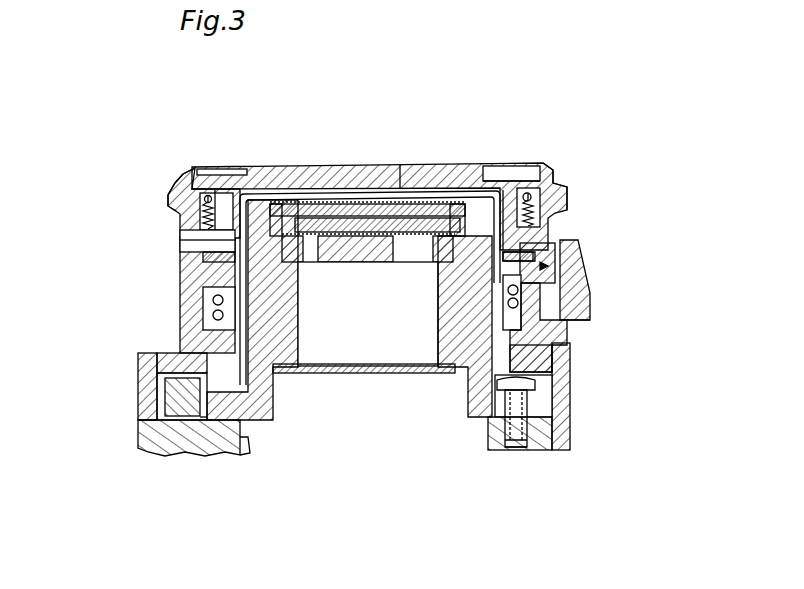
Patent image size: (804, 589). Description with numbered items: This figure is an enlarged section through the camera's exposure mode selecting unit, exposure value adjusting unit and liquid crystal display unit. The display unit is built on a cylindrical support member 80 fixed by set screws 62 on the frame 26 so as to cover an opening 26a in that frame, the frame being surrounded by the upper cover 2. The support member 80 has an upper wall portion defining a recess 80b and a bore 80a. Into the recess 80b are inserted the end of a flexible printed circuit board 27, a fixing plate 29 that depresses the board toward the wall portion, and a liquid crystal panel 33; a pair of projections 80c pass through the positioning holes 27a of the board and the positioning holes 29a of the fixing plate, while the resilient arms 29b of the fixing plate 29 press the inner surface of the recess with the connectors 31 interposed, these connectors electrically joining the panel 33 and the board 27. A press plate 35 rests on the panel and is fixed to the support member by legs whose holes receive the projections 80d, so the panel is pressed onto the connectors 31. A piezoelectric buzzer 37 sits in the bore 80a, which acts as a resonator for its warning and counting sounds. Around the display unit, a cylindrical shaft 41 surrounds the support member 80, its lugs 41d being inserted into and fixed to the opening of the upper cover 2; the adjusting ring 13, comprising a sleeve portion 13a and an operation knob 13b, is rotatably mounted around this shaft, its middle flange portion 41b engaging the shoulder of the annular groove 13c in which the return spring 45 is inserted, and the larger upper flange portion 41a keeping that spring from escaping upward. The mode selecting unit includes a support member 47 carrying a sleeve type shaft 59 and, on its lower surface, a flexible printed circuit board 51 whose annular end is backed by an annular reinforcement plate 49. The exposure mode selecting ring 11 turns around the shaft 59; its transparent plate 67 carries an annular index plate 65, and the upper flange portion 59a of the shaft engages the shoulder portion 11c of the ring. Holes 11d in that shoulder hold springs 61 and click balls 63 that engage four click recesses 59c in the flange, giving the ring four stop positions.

The upper cover 2 is at (563, 407).
The exposure mode selecting ring 11 is at (560, 192).
The shoulder portion 11c is at (220, 168).
The holes 11d is at (567, 182).
The adjusting ring 13 is at (560, 343).
The sleeve portion 13a is at (140, 360).
The operation knob 13b is at (593, 302).
The annular groove 13c is at (183, 327).
The frame 26 is at (553, 447).
The opening 26a is at (248, 453).
The flexible printed circuit board 27 is at (318, 225).
The positioning holes 27a is at (350, 235).
The fixing plate 29 is at (452, 171).
The positioning holes 29a is at (400, 230).
The resilient arms 29b is at (302, 173).
The connectors 31 is at (447, 283).
The liquid crystal panel 33 is at (333, 173).
The press plate 35 is at (272, 173).
The piezoelectric buzzer 37 is at (410, 375).
The cylindrical shaft 41 is at (567, 372).
The upper flange portion 41a is at (143, 447).
The middle flange portion 41b is at (137, 413).
The lugs 41d is at (200, 423).
The return spring 45 is at (573, 317).
The support member 47 is at (182, 272).
The annular reinforcement plate 49 is at (550, 257).
The flexible printed circuit board 51 is at (563, 267).
The sleeve type shaft 59 is at (182, 253).
The upper flange portion 59a is at (540, 168).
The click recesses 59c is at (197, 167).
The springs 61 is at (180, 225).
The set screws 62 is at (515, 420).
The click balls 63 is at (177, 175).
The annular index plate 65 is at (522, 165).
The transparent plate 67 is at (407, 171).
The cylindrical support member 80 is at (482, 420).
The bore 80a is at (430, 420).
The recess 80b is at (298, 372).
The projections 80c is at (380, 173).
The projections 80d is at (182, 300).